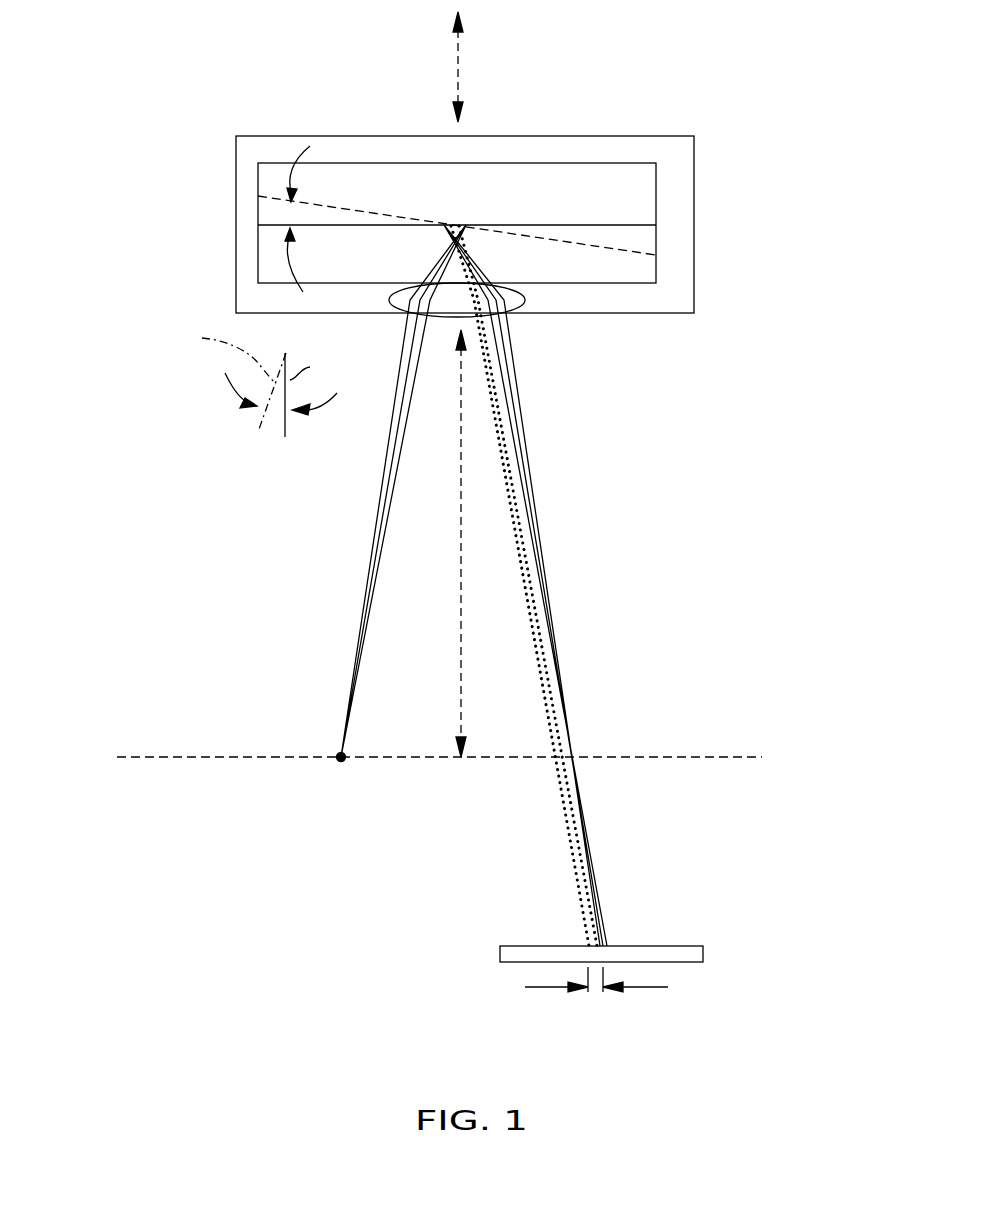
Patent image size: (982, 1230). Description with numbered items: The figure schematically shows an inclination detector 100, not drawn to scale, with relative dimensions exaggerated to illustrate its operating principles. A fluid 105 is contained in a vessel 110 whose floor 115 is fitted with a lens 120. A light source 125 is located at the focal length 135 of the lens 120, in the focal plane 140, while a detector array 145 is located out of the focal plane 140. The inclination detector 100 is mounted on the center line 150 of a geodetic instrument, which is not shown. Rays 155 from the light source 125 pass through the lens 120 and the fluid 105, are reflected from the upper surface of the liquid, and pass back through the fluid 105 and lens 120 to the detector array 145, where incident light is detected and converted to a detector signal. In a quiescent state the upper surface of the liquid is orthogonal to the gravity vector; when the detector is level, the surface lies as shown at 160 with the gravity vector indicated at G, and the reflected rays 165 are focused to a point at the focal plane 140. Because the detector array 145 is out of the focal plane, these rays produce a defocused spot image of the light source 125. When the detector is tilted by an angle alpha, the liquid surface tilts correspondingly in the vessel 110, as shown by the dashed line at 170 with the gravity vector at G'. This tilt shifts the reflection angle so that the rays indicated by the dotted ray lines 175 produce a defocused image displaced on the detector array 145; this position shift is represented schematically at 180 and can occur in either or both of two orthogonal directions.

The inclination detector 100 is at (720, 256).
The fluid 105 is at (552, 273).
The vessel 110 is at (694, 176).
The floor 115 is at (620, 297).
The lens 120 is at (407, 317).
The light source 125 is at (340, 756).
The focal length 135 is at (458, 555).
The focal plane 140 is at (427, 757).
The detector array 145 is at (678, 946).
The center line 150 is at (458, 55).
The rays 155 is at (347, 697).
The upper surface of liquid when level 160 is at (575, 225).
The reflected rays 165 is at (577, 757).
The tilted upper surface of liquid 170 is at (362, 208).
The dotted ray lines 175 is at (557, 757).
The position shift 180 is at (595, 995).